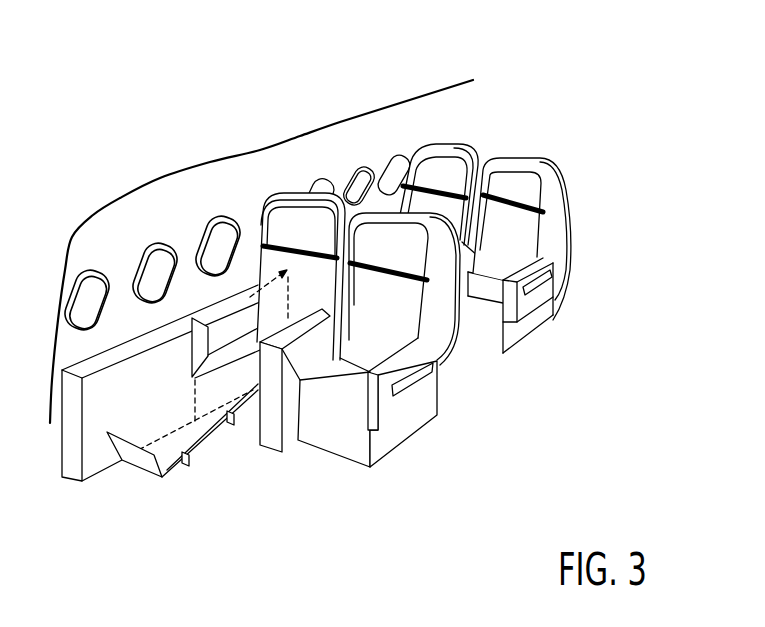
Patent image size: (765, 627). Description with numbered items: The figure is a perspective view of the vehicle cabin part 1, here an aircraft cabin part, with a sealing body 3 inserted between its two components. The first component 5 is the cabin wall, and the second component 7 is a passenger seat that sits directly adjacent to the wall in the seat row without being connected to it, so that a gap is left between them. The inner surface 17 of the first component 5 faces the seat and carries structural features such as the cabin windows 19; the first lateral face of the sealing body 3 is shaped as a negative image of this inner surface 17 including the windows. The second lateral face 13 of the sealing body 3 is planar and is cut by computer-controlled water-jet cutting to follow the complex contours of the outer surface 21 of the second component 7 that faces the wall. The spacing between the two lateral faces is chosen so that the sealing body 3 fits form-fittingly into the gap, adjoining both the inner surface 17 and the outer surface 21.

The vehicle cabin part 1 is at (566, 101).
The sealing body 3 is at (148, 398).
The first component 5 is at (413, 135).
The second component 7 is at (310, 243).
The second lateral face 13 is at (98, 448).
The inner surface 17 is at (134, 244).
The cabin windows 19 is at (317, 182).
The outer surface 21 is at (253, 256).